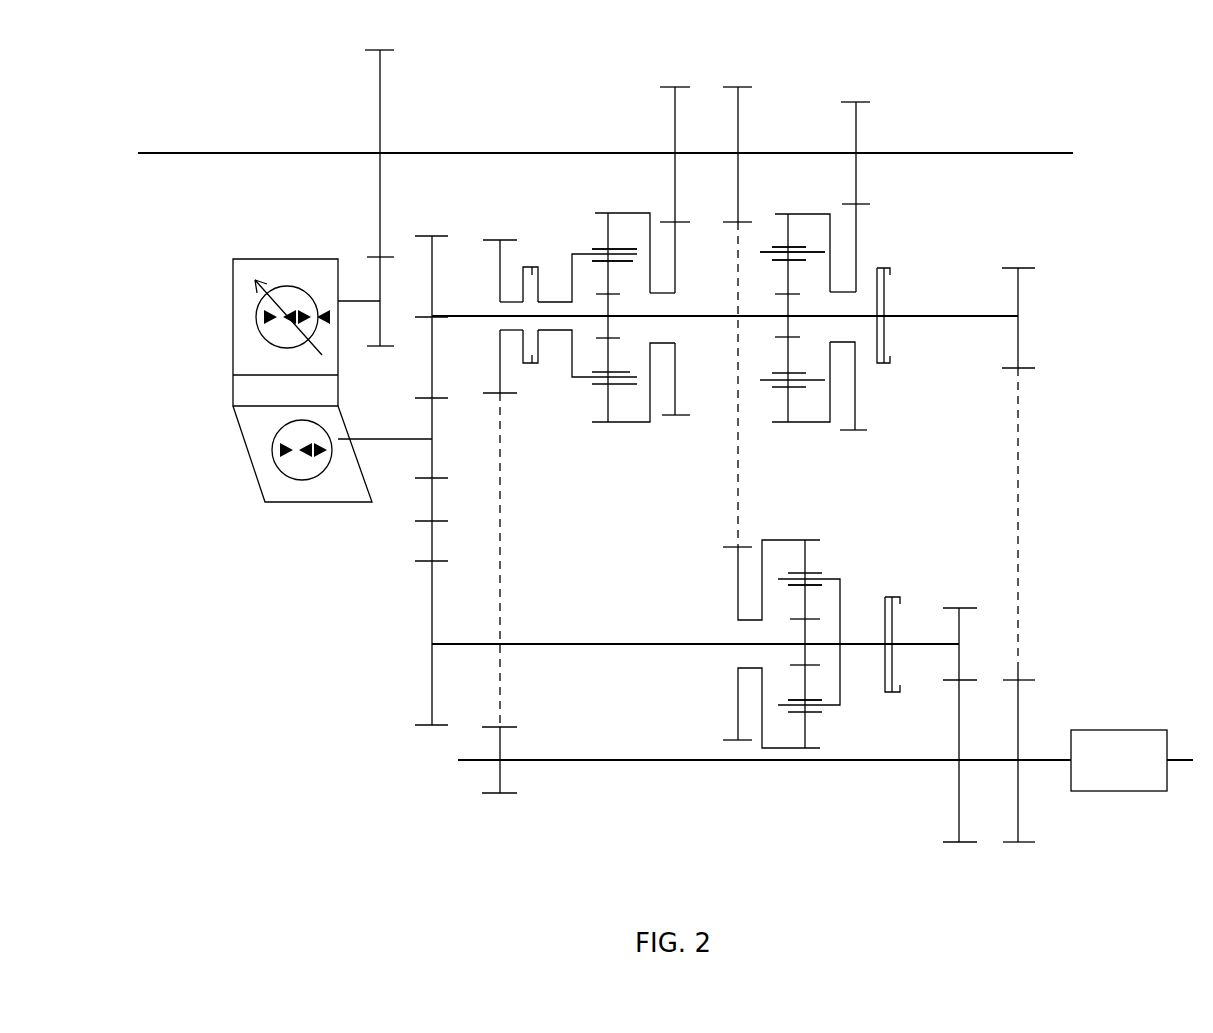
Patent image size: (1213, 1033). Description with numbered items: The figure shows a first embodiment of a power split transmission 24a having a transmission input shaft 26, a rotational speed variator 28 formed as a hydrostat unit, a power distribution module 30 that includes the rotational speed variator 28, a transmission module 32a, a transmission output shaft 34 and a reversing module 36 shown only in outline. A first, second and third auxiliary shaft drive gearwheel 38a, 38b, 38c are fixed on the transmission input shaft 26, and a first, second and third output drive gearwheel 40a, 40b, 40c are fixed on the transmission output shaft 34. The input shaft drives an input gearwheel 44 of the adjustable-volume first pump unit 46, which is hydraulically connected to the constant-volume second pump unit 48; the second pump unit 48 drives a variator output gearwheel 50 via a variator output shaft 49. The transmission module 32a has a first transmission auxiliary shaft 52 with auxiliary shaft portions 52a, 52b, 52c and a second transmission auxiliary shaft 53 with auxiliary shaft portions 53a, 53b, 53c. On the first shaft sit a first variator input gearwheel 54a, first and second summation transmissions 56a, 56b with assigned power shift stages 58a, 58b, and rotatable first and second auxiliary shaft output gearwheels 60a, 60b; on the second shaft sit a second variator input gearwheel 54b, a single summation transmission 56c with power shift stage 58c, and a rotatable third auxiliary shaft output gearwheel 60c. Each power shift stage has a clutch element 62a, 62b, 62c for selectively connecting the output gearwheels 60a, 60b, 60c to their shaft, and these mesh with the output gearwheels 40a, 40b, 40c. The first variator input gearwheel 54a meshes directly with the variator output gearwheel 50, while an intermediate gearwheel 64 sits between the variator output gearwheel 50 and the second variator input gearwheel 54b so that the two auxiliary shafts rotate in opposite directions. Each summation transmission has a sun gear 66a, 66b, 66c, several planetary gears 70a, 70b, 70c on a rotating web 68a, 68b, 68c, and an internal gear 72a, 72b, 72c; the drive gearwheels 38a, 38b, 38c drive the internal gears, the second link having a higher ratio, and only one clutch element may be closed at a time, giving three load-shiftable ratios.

The power split transmission 24a is at (989, 91).
The transmission input shaft 26 is at (225, 153).
The rotational speed variator 28 is at (258, 371).
The power distribution module 30 is at (428, 85).
The transmission module 32a is at (1061, 367).
The transmission output shaft 34 is at (663, 761).
The reversing module 36 is at (1127, 730).
The first auxiliary shaft drive gearwheel 38a is at (670, 117).
The second auxiliary shaft drive gearwheel 38b is at (857, 127).
The third auxiliary shaft drive gearwheel 38c is at (733, 117).
The first output drive gearwheel 40a is at (499, 777).
The second output drive gearwheel 40b is at (1020, 817).
The third output drive gearwheel 40c is at (958, 812).
The input gearwheel 44 is at (380, 120).
The first pump unit 46 is at (380, 298).
The second pump unit 48 is at (258, 486).
The variator output shaft 49 is at (392, 442).
The variator output gearwheel 50 is at (432, 428).
The first transmission auxiliary shaft 52 is at (949, 237).
The first auxiliary shaft portion 52a is at (476, 339).
The second auxiliary shaft portion 52b is at (860, 316).
The third auxiliary shaft portion 52c is at (932, 316).
The second transmission auxiliary shaft 53 is at (605, 668).
The first auxiliary shaft portion 53a is at (533, 643).
The second auxiliary shaft portion 53b is at (863, 643).
The third auxiliary shaft portion 53c is at (913, 643).
The first variator input gearwheel 54a is at (430, 287).
The second variator input gearwheel 54b is at (432, 682).
The first summation transmission 56a is at (621, 444).
The second summation transmission 56b is at (863, 431).
The third summation transmission 56c is at (853, 725).
The first power shift stage 58a is at (544, 423).
The second power shift stage 58b is at (930, 354).
The third power shift stage 58c is at (914, 570).
The first auxiliary shaft output gearwheel 60a is at (500, 272).
The second auxiliary shaft output gearwheel 60b is at (1020, 300).
The third auxiliary shaft output gearwheel 60c is at (960, 630).
The first clutch element 62a is at (538, 267).
The second clutch element 62b is at (882, 267).
The third clutch element 62c is at (897, 595).
The intermediate gearwheel 64 is at (432, 542).
The first sun gear 66a is at (578, 335).
The second sun gear 66b is at (782, 370).
The third sun gear 66c is at (807, 653).
The first web 68a is at (572, 282).
The second web 68b is at (818, 250).
The third web 68c is at (840, 683).
The first planetary gears 70a is at (613, 262).
The second planetary gears 70b is at (780, 262).
The third planetary gears 70c is at (797, 587).
The first internal gear 72a is at (648, 212).
The second internal gear 72b is at (797, 423).
The third internal gear 72c is at (787, 750).